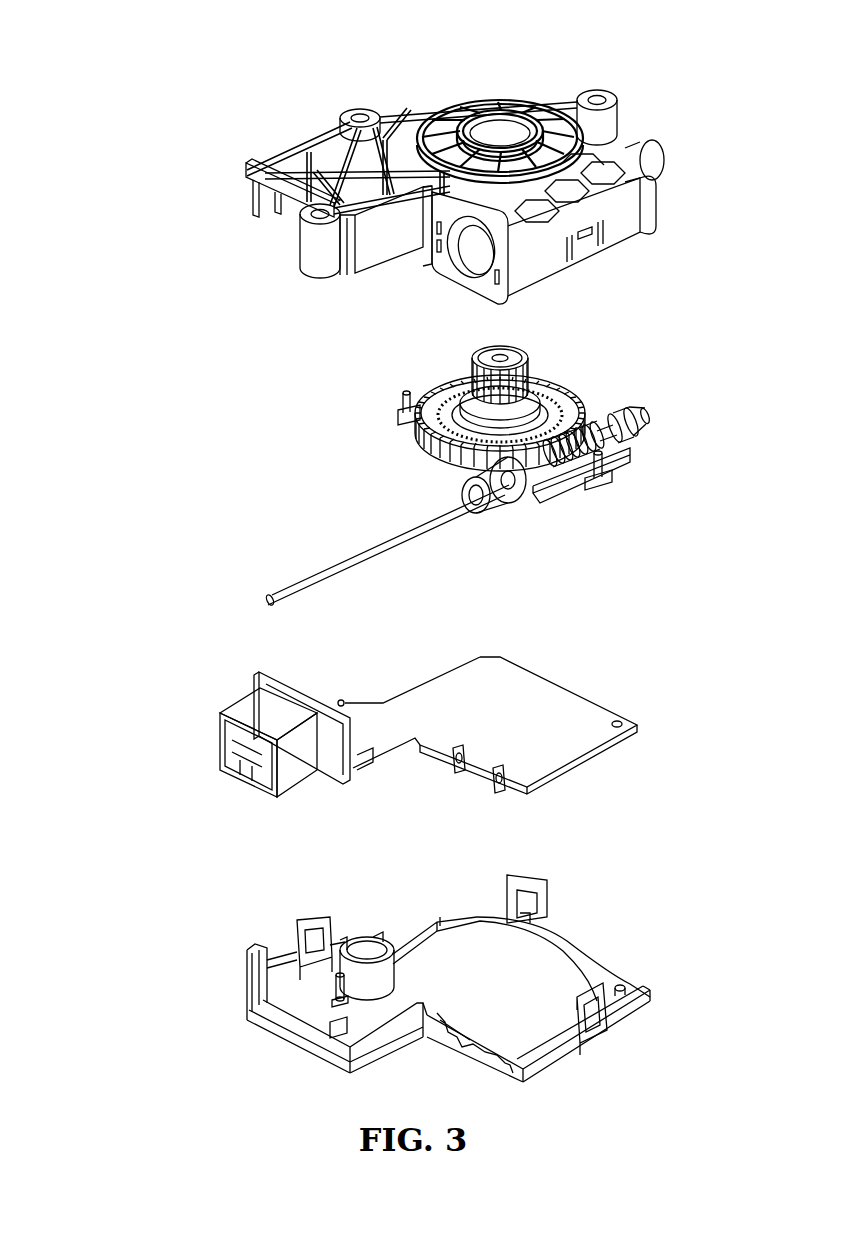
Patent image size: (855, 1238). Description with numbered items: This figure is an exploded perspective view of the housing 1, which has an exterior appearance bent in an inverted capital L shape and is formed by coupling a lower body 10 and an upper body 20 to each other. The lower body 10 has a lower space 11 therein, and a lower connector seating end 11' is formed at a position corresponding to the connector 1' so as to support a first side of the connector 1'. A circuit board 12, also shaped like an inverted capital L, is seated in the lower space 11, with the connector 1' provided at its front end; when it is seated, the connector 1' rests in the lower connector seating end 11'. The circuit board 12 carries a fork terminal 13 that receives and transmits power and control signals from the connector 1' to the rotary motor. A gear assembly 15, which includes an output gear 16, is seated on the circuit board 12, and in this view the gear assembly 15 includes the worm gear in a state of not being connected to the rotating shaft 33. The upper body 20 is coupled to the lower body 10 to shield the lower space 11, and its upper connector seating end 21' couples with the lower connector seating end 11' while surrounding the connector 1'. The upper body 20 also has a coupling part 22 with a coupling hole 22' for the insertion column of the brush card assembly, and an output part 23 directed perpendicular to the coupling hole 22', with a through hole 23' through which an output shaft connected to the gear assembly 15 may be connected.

The housing 1 is at (410, 566).
The connector 1' is at (254, 734).
The lower body 10 is at (643, 1007).
The lower space 11 is at (496, 1052).
The lower connector seating end 11' is at (268, 1008).
The circuit board 12 is at (583, 703).
The fork terminal 13 is at (490, 780).
The gear assembly 15 is at (648, 453).
The output gear 16 is at (537, 355).
The upper body 20 is at (637, 202).
The upper connector seating end 21' is at (238, 197).
The coupling part 22 is at (538, 249).
The coupling hole 22' is at (413, 271).
The output part 23 is at (500, 98).
The through hole 23' is at (583, 100).
The rotating shaft 33 is at (388, 538).